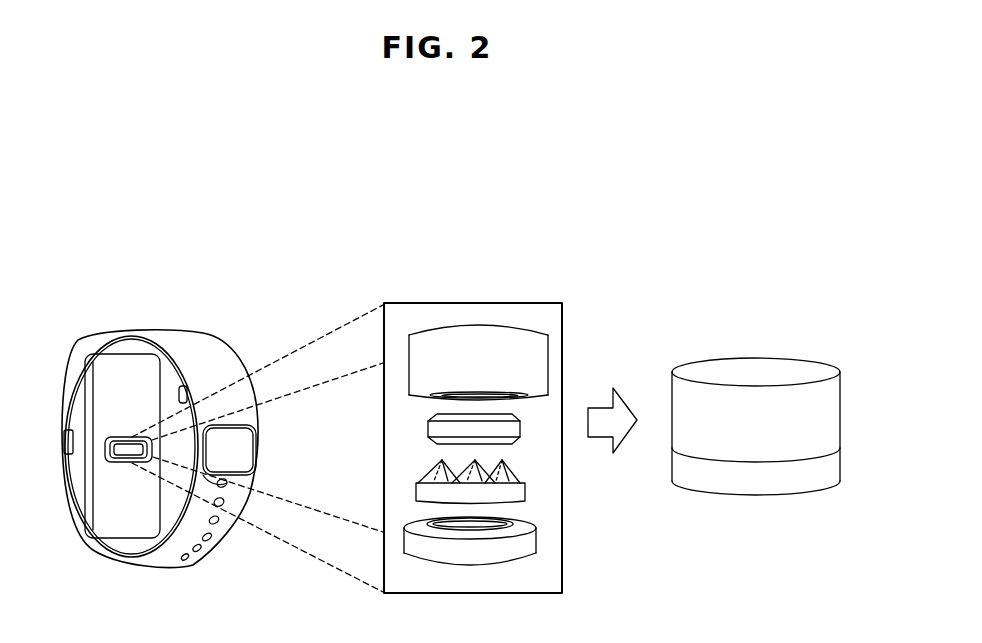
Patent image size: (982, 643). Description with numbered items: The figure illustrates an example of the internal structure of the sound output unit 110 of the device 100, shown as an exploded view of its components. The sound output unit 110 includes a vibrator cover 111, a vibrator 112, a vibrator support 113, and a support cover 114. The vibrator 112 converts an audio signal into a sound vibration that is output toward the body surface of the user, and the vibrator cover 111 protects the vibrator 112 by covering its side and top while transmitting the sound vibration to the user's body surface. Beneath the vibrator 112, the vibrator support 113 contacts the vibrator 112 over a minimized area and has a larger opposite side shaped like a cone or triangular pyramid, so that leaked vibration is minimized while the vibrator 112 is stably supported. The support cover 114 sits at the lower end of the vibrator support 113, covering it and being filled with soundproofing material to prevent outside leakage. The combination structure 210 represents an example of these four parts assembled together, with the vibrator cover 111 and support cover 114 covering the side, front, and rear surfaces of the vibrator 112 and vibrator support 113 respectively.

The device 100 is at (139, 331).
The sound output unit 110 is at (130, 437).
The vibrator cover 111 is at (550, 363).
The vibrator 112 is at (517, 428).
The vibrator support 113 is at (522, 492).
The support cover 114 is at (530, 542).
The combination structure 210 is at (778, 328).